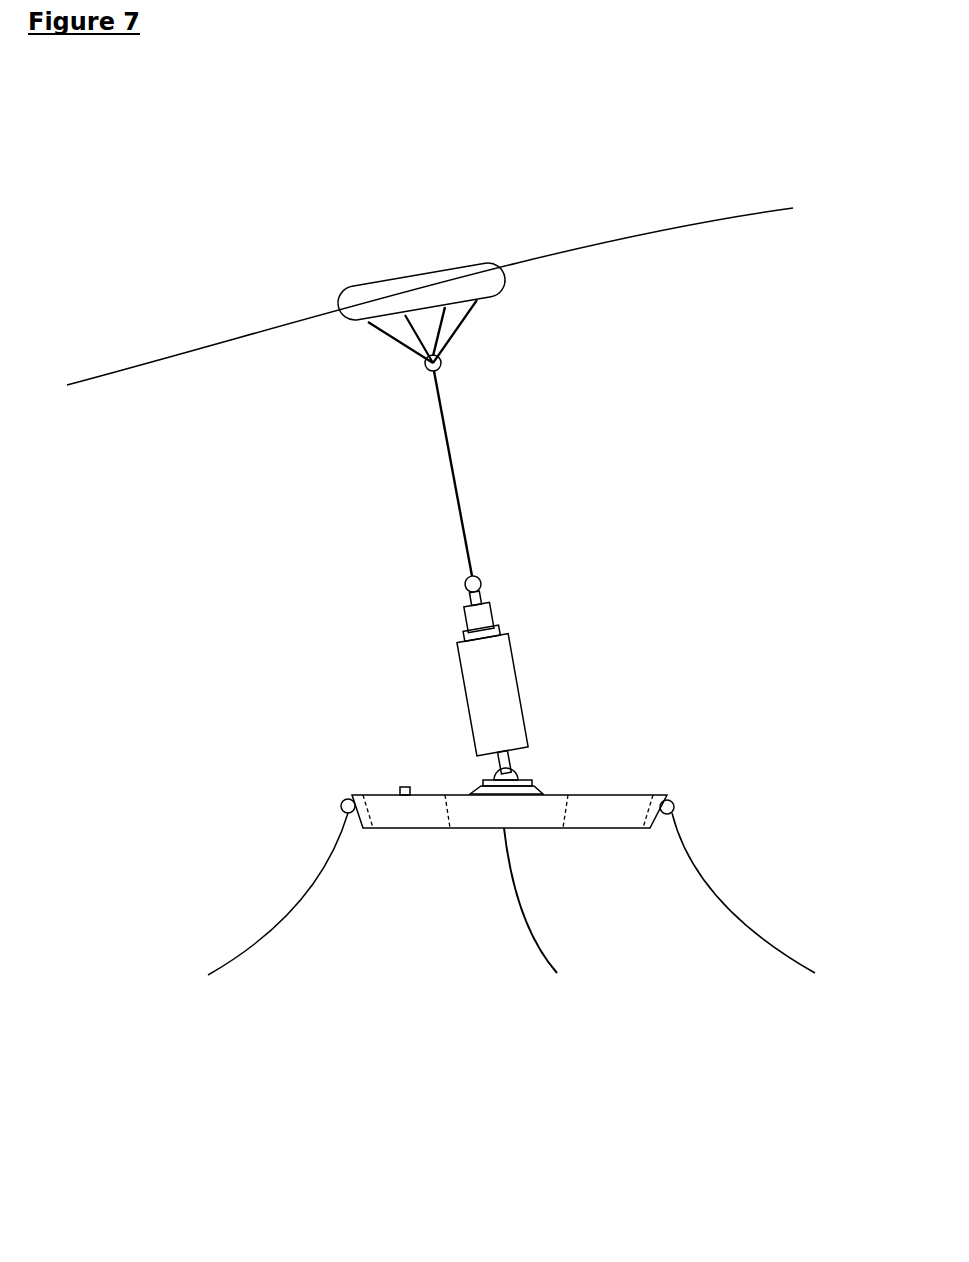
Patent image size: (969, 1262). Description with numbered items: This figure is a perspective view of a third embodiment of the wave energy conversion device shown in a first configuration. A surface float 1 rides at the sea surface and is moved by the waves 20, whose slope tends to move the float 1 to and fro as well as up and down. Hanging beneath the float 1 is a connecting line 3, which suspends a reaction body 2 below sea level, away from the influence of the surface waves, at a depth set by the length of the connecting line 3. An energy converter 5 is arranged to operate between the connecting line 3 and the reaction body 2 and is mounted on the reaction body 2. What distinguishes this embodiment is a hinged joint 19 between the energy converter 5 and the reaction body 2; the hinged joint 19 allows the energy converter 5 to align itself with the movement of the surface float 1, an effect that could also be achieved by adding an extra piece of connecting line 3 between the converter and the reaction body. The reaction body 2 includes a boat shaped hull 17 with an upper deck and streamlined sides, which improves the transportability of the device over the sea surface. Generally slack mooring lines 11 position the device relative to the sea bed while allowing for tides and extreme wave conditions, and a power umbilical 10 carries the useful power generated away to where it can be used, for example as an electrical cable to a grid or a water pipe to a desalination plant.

The surface float 1 is at (360, 295).
The reaction body 2 is at (589, 873).
The connecting line 3 is at (457, 470).
The energy converter 5 is at (490, 682).
The power umbilical 10 is at (530, 814).
The mooring lines 11 is at (272, 1018).
The boat shaped hull 17 is at (403, 632).
The hinged joint 19 is at (507, 884).
The waves 20 is at (607, 335).